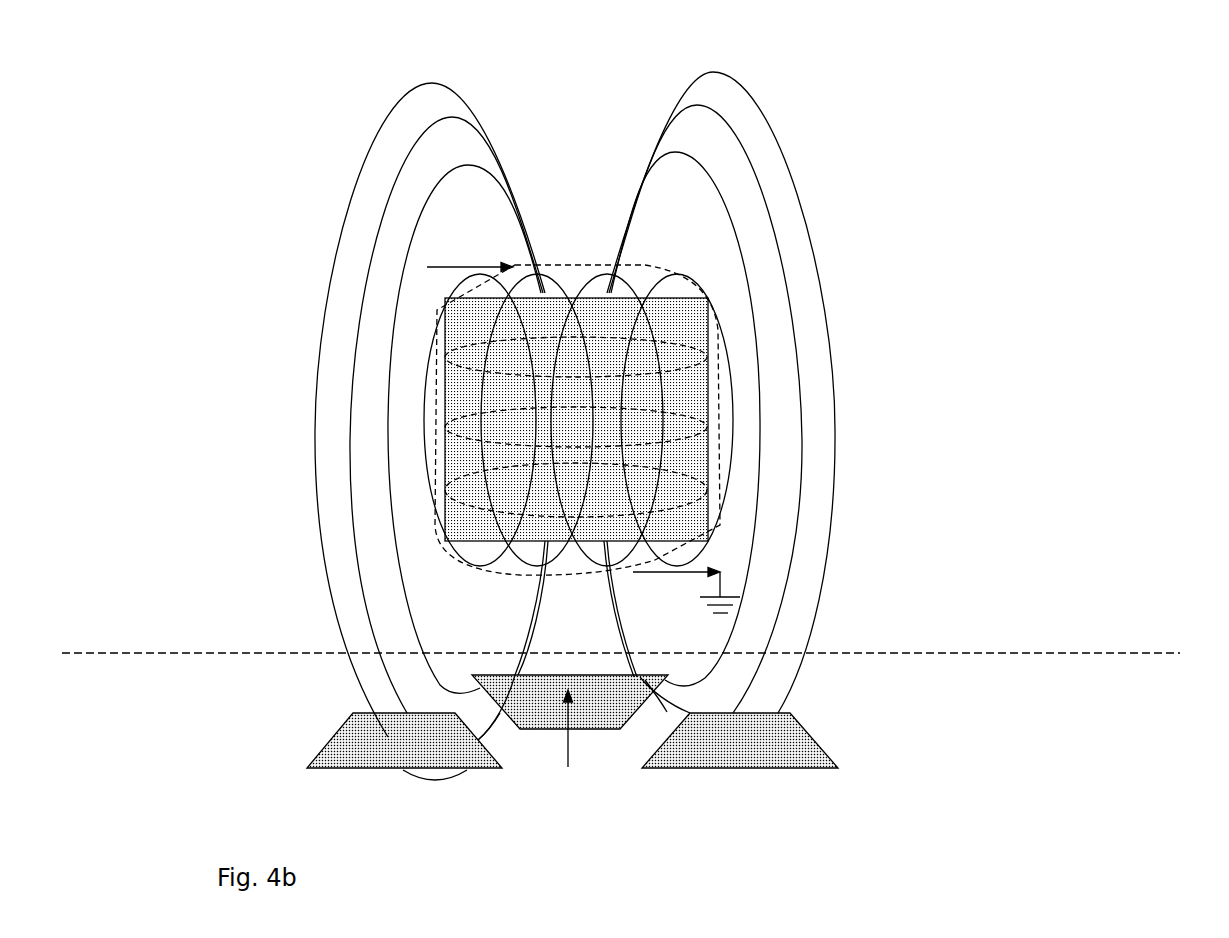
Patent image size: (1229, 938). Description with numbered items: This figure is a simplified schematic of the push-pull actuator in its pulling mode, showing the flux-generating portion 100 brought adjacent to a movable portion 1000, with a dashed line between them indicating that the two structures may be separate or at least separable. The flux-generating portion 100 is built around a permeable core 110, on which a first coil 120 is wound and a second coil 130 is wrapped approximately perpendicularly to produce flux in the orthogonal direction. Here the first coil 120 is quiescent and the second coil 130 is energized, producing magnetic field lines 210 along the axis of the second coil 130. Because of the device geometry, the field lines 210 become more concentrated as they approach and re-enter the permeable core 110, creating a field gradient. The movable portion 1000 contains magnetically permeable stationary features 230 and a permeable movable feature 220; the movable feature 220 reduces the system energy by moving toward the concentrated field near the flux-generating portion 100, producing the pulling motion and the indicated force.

The flux-generating portion 100 is at (903, 532).
The permeable core 110 is at (702, 357).
The coil 120 is at (627, 282).
The second coil 130 is at (725, 468).
The magnetic field lines 210 is at (777, 128).
The permeable movable feature 220 is at (538, 700).
The stationary permeable features 230 is at (717, 728).
The movable portion 1000 is at (886, 790).